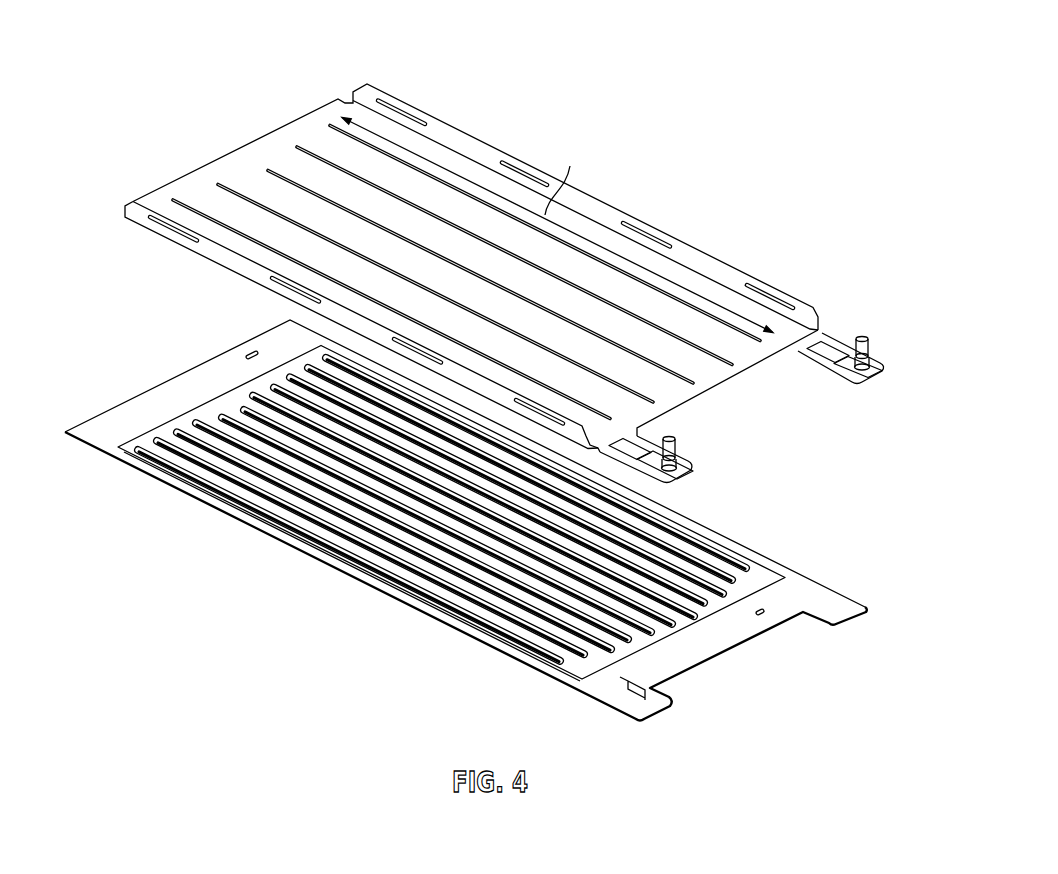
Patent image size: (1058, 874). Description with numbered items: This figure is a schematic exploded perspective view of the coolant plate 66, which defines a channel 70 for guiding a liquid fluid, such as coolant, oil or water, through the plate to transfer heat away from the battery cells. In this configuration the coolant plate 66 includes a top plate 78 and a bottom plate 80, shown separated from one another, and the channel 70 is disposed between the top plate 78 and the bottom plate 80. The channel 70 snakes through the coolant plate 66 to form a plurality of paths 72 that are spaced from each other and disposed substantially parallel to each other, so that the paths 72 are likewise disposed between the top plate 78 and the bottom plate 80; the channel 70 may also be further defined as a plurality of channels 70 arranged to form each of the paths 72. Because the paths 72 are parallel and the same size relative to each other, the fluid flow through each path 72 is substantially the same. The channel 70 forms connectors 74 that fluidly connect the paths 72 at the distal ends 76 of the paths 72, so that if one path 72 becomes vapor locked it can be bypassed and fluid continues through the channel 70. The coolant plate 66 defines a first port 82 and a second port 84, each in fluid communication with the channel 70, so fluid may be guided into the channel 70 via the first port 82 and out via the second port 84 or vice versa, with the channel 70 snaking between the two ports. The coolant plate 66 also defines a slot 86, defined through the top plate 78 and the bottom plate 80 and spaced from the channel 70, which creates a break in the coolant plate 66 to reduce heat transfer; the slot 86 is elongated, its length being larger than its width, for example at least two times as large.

The coolant plate 66 is at (498, 410).
The channel 70 is at (466, 520).
The paths 72 is at (484, 638).
The connectors 74 is at (207, 410).
The distal ends 76 is at (473, 540).
The top plate 78 is at (437, 122).
The bottom plate 80 is at (466, 520).
The first port 82 is at (677, 450).
The second port 84 is at (872, 348).
The slot 86 is at (173, 198).